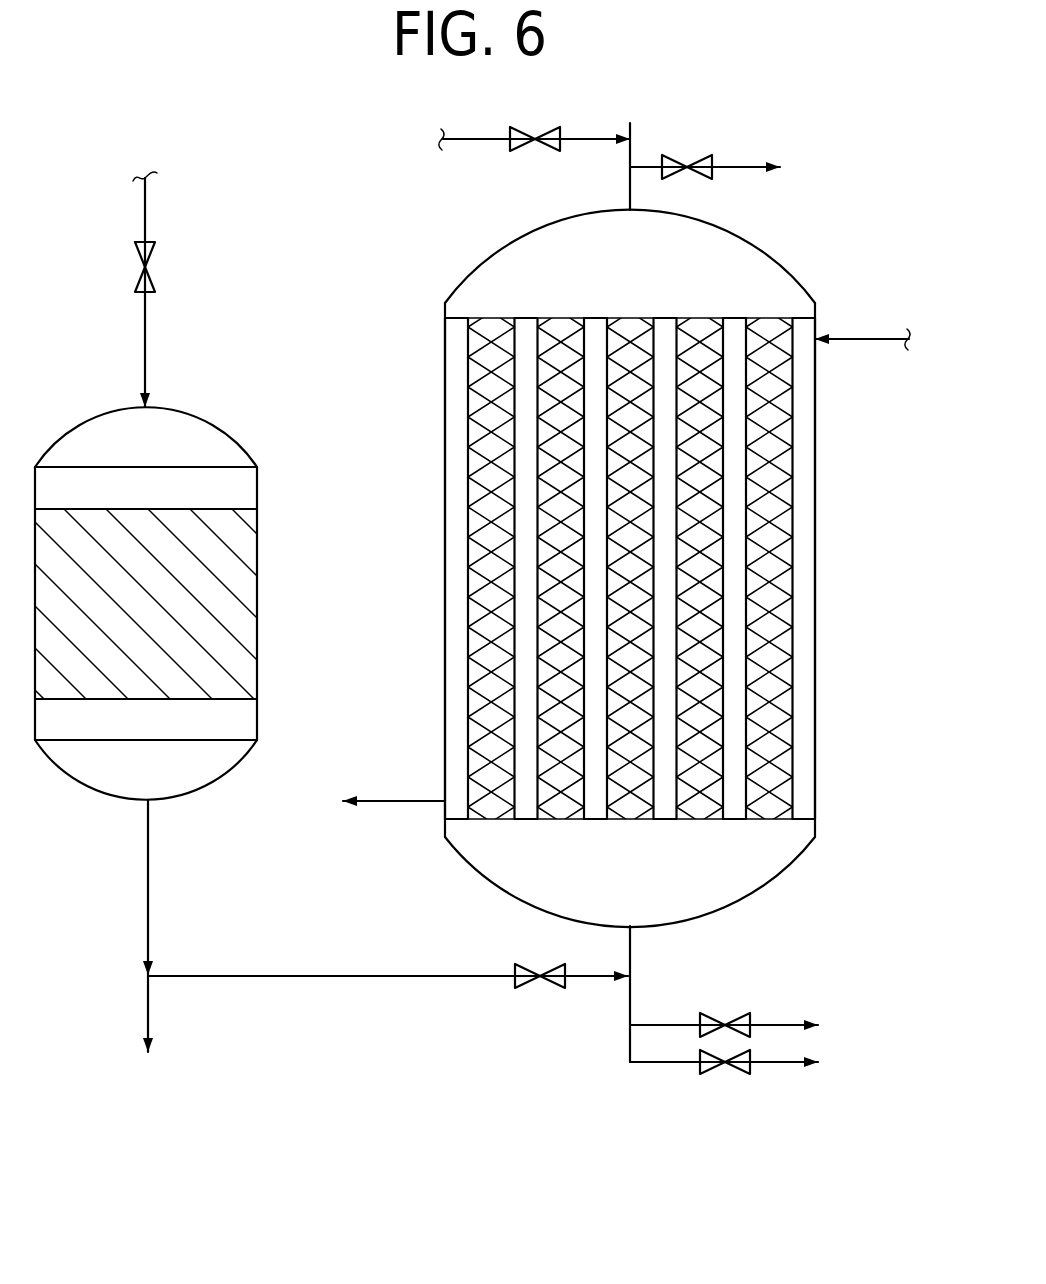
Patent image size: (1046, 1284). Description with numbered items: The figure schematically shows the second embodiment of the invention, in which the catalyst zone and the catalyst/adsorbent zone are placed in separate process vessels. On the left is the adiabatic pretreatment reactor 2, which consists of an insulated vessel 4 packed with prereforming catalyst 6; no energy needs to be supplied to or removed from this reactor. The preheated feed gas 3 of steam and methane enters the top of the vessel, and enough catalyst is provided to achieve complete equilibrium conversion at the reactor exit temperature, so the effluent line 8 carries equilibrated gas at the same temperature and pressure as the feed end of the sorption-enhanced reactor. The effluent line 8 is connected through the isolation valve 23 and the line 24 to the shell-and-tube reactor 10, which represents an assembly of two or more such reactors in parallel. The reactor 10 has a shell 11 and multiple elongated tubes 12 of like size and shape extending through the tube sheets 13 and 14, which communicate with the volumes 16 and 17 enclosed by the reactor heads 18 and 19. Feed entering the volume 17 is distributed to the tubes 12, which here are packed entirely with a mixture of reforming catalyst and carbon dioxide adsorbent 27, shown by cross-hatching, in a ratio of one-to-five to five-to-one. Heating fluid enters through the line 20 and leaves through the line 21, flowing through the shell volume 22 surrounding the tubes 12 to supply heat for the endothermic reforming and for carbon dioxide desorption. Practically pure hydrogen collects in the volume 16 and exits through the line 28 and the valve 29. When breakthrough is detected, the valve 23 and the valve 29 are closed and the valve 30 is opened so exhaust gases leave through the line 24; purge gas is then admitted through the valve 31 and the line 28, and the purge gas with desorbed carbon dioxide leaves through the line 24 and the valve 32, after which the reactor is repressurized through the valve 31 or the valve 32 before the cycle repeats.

The adiabatic pretreatment reactor 2 is at (278, 629).
The feed gas 3 is at (147, 335).
The insulated vessel 4 is at (220, 425).
The prereforming catalyst 6 is at (232, 540).
The effluent line 8 is at (148, 890).
The reactor 10 is at (626, 569).
The shell 11 is at (816, 462).
The tubes 12 is at (467, 458).
The tube sheet 13 is at (520, 316).
The tube sheet 14 is at (588, 820).
The volume 16 is at (637, 267).
The volume 17 is at (660, 878).
The reactor head 18 is at (764, 246).
The reactor head 19 is at (782, 880).
The line 20 is at (885, 330).
The line 21 is at (392, 800).
The shell volume 22 is at (522, 592).
The valve 23 is at (540, 988).
The line 24 is at (632, 945).
The mixture of catalyst and adsorbent 27 is at (778, 655).
The line 28 is at (628, 190).
The valve 29 is at (690, 155).
The valve 30 is at (725, 1013).
The valve 31 is at (535, 127).
The valve 32 is at (725, 1074).